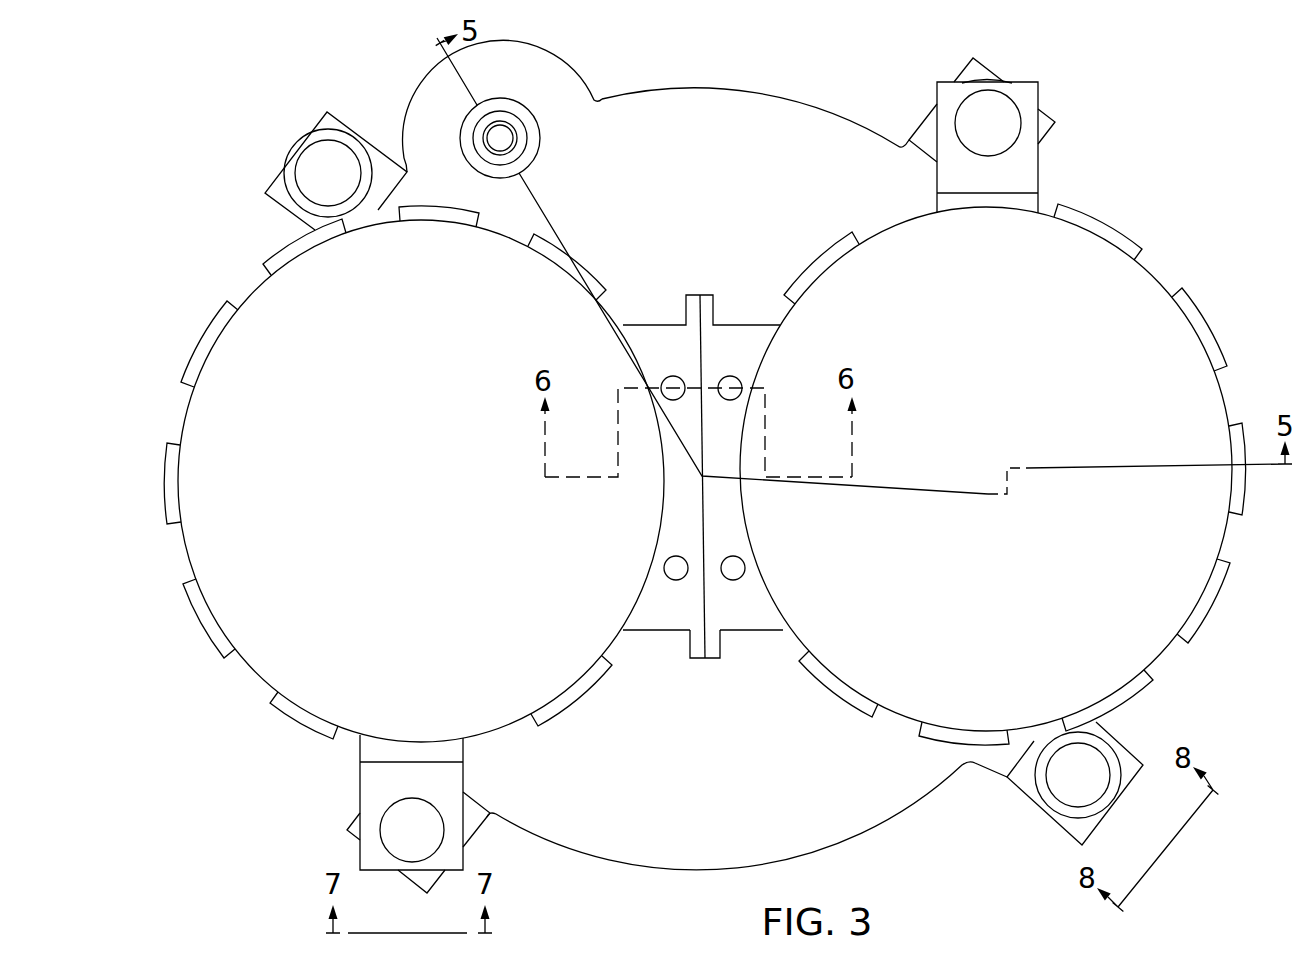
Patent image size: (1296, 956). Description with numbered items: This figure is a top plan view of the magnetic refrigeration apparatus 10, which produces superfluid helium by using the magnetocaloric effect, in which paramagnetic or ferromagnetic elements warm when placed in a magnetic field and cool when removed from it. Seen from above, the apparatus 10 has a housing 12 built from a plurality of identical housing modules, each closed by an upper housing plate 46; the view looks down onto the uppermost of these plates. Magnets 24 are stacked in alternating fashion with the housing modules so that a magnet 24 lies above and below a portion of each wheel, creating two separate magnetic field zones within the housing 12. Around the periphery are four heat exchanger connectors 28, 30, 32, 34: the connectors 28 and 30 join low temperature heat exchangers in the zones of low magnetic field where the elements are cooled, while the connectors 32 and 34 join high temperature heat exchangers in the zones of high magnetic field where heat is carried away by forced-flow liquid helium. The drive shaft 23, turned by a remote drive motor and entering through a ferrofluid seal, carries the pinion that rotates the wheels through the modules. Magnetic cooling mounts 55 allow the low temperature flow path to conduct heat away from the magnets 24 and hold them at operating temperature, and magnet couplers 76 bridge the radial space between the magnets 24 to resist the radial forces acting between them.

The magnetic refrigeration apparatus 10 is at (705, 467).
The housing 12 is at (580, 853).
The drive shaft 23 is at (500, 123).
The magnets 24 is at (253, 292).
The heat exchanger connector 28 is at (358, 820).
The heat exchanger connector 30 is at (1039, 137).
The heat exchanger connector 32 is at (279, 175).
The heat exchanger connector 34 is at (1043, 815).
The upper housing plate 46 is at (757, 90).
The magnetic cooling mounts 55 is at (360, 857).
The magnet couplers 76 is at (712, 660).